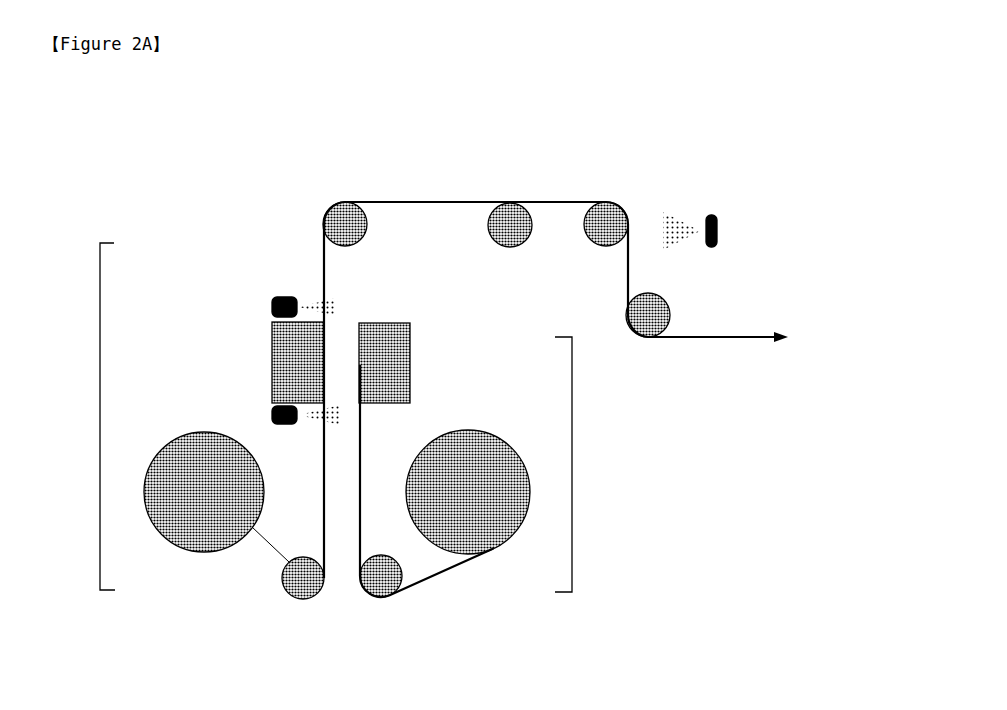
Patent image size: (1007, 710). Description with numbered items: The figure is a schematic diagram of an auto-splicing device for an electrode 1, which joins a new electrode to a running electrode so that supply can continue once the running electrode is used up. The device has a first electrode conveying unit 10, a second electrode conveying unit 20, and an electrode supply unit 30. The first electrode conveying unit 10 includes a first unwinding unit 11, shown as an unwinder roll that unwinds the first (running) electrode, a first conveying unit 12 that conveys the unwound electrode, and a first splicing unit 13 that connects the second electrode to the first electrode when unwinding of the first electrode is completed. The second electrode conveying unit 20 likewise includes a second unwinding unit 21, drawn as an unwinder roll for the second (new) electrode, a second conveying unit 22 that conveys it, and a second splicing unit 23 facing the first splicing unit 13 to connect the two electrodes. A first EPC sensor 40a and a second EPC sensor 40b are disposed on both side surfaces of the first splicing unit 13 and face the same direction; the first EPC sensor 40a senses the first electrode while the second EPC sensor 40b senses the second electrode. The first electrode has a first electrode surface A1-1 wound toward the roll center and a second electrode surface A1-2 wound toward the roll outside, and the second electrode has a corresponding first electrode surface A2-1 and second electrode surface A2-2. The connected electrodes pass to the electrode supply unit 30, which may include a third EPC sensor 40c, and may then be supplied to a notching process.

The auto-splicing device for an electrode 1 is at (418, 121).
The first electrode conveying unit 10 is at (100, 418).
The first unwinding unit 11 is at (204, 507).
The first conveying unit 12 is at (303, 591).
The first splicing unit 13 is at (282, 362).
The second electrode conveying unit 20 is at (572, 465).
The second unwinding unit 21 is at (468, 499).
The second conveying unit 22 is at (380, 589).
The second splicing unit 23 is at (400, 363).
The electrode supply unit 30 is at (642, 362).
The first Edge Position Control (EPC) sensor 40a is at (266, 306).
The second EPC sensor 40b is at (268, 418).
The third EPC sensor 40c is at (732, 220).
The first electrode surface of the first electrode A1-1 is at (273, 551).
The second electrode surface of the first electrode A1-2 is at (324, 468).
The first electrode surface of the second electrode A2-1 is at (363, 444).
The second electrode surface of the second electrode A2-2 is at (439, 574).